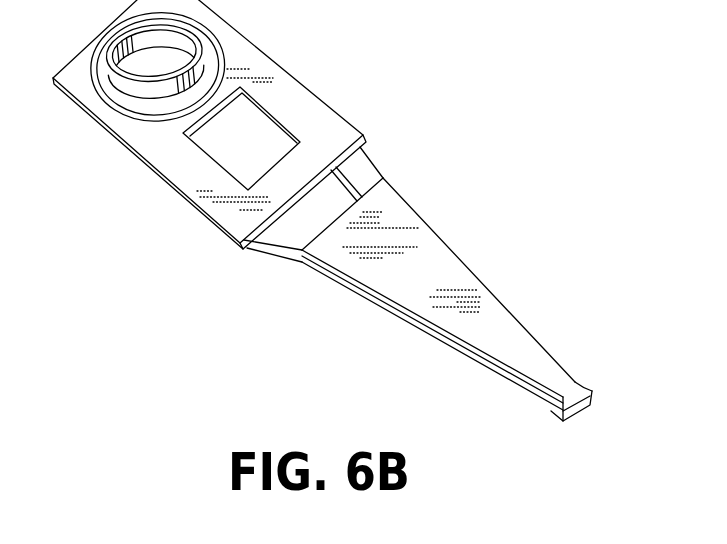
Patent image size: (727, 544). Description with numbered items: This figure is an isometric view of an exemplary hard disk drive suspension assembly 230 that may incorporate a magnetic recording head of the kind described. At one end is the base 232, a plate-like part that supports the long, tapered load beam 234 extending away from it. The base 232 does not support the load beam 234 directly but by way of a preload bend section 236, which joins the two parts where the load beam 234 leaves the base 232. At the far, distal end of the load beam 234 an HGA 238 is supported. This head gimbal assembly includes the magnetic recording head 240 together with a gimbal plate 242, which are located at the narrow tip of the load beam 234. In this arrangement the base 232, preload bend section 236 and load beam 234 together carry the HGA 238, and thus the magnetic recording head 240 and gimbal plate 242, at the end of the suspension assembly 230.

The suspension assembly 230 is at (325, 230).
The base 232 is at (277, 61).
The load beam 234 is at (447, 247).
The preload bend section 236 is at (279, 240).
The HGA 238 is at (589, 362).
The magnetic recording head 240 is at (561, 422).
The gimbal plate 242 is at (545, 396).